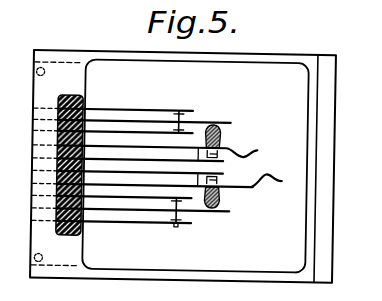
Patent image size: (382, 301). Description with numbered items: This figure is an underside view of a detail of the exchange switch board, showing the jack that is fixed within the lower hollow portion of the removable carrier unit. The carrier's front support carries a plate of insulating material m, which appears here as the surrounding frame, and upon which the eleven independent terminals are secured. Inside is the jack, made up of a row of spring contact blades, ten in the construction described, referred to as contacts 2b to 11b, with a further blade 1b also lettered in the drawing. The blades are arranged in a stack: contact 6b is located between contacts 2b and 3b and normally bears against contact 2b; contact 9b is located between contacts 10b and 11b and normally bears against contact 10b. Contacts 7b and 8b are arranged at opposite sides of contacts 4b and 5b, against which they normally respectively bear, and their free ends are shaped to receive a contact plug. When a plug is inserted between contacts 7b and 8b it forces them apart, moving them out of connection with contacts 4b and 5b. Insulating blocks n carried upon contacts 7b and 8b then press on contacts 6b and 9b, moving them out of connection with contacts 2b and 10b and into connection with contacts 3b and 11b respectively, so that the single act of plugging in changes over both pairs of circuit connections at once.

The contact spring 1b is at (124, 187).
The spring contact blade 2b is at (146, 199).
The spring contact blade 3b is at (192, 224).
The spring contact blade 4b is at (93, 174).
The spring contact blade 5b is at (83, 145).
The spring contact blade 6b is at (228, 212).
The spring contact blade 7b is at (282, 179).
The spring contact blade 8b is at (96, 146).
The spring contact blade 9b is at (146, 121).
The spring contact blade 10b is at (121, 131).
The spring contact blade 11b is at (191, 110).
The insulating block n is at (222, 132).
The plate of insulating material m is at (328, 86).